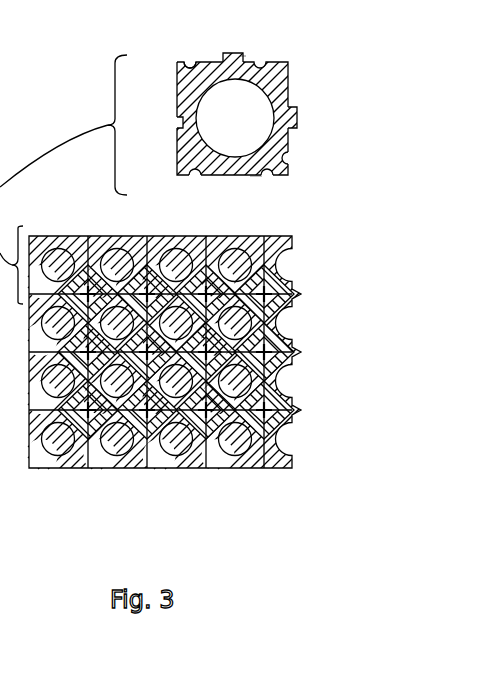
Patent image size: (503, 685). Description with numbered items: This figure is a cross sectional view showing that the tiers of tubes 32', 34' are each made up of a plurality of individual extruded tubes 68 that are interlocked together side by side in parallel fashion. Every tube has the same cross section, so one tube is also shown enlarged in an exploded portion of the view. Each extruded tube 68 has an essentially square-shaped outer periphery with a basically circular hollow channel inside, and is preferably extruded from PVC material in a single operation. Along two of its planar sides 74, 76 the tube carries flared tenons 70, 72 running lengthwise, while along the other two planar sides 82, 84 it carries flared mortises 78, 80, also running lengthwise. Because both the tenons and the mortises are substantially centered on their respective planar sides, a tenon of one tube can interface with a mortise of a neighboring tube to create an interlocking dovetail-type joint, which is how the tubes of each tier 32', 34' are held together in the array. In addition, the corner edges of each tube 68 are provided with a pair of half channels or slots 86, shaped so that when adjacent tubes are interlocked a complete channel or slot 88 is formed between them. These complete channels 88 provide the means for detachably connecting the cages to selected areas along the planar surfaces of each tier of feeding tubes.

The extruded tube 68 is at (280, 82).
The flared tenon 70 is at (234, 52).
The planar side 74 is at (255, 58).
The flared tenon 72 is at (297, 114).
The planar side 76 is at (290, 141).
The half channel or slot 86 is at (290, 162).
The planar side 84 is at (250, 177).
The flared mortise 80 is at (233, 168).
The flared mortise 78 is at (184, 116).
The planar side 82 is at (181, 101).
The complete channel or slot 88 is at (90, 473).
The tier of tubes 32' is at (200, 353).
The tier of tubes 34' is at (200, 355).